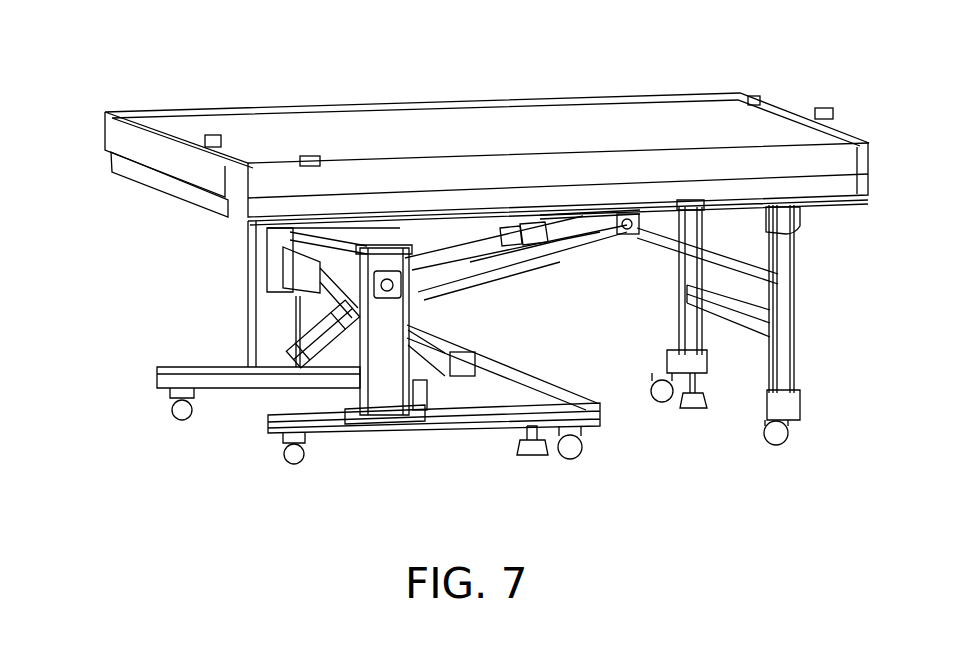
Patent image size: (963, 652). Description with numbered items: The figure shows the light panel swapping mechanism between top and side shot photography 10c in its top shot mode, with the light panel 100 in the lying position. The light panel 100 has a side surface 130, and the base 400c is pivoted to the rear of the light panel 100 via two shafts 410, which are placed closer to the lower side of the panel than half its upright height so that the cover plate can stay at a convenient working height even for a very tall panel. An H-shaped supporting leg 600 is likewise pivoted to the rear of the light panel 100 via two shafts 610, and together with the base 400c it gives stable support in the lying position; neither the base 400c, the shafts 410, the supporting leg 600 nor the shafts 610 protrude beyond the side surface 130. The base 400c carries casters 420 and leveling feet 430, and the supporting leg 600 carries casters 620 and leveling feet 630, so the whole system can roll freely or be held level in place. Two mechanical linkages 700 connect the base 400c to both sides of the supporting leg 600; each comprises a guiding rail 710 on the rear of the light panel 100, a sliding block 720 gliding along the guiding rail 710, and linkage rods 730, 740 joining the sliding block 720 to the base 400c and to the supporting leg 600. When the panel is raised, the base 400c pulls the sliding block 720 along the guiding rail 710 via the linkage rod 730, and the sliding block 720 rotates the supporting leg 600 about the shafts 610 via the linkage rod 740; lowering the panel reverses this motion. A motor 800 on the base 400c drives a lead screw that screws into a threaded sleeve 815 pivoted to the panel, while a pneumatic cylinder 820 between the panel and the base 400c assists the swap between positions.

The light panel 100 is at (106, 134).
The side surface 130 is at (188, 172).
The base 400c is at (157, 378).
The shaft 410 is at (386, 242).
The caster 420 is at (577, 460).
The leveling foot 430 is at (533, 460).
The supporting leg 600 is at (800, 410).
The shaft 610 is at (784, 220).
The caster 620 is at (780, 445).
The leveling foot 630 is at (697, 412).
The mechanical linkage 700 is at (800, 50).
The guiding rail 710 is at (605, 210).
The sliding block 720 is at (632, 210).
The linkage rod 730 is at (560, 240).
The linkage rod 740 is at (710, 255).
The motor 800 is at (300, 347).
The threaded sleeve 815 is at (497, 240).
The pneumatic cylinder 820 is at (528, 240).
The light panel swapping mechanism between top and side shot photography 10c is at (857, 527).